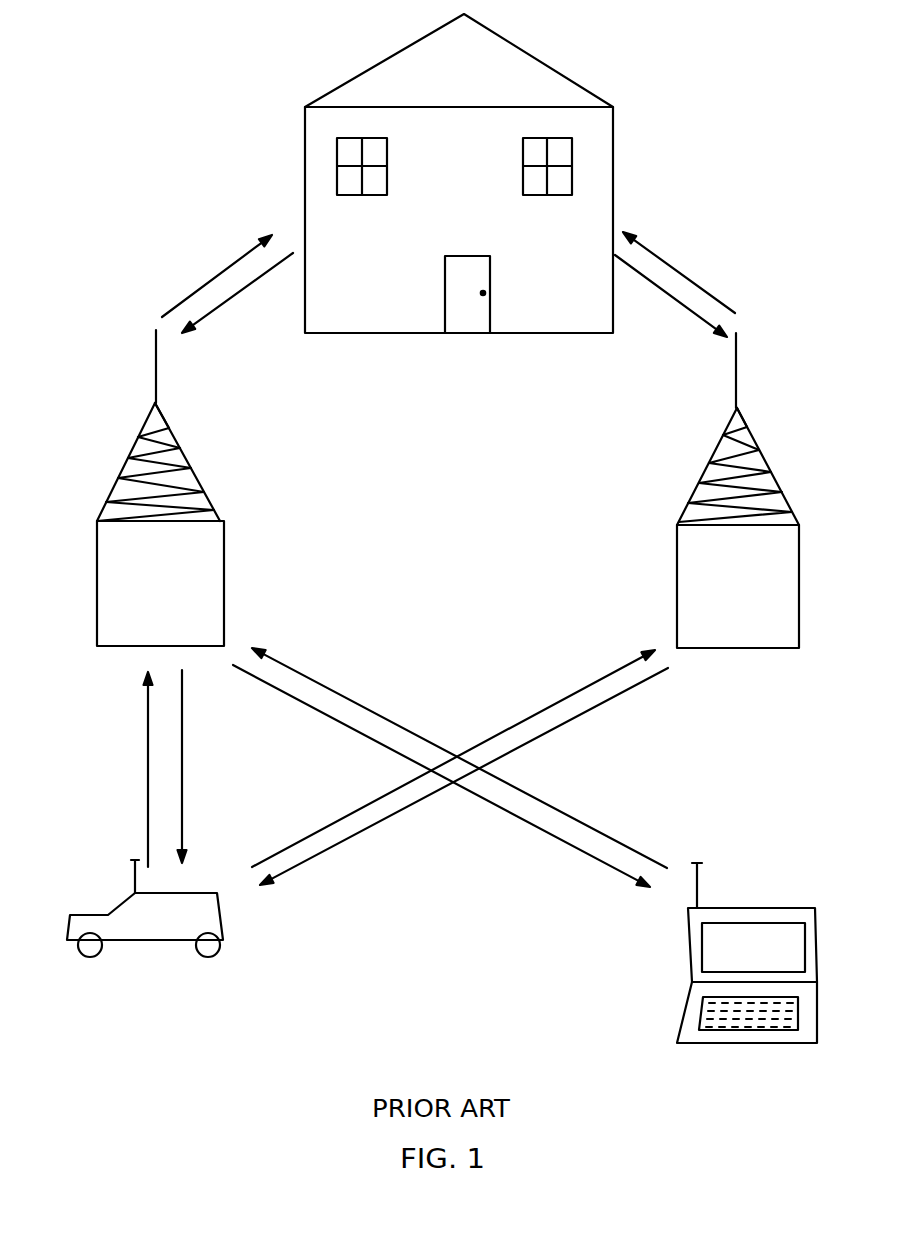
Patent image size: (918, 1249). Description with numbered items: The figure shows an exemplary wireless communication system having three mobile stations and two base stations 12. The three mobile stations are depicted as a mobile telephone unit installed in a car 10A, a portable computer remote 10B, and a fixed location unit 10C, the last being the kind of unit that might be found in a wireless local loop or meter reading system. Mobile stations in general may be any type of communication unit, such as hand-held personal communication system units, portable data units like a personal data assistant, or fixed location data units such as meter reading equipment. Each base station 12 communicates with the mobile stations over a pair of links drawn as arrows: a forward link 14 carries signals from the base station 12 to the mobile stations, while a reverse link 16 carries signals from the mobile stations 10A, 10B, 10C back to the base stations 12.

The mobile telephone unit installed in a car 10A is at (90, 915).
The portable computer remote 10B is at (792, 907).
The fixed location unit 10C is at (532, 57).
The base station 12 is at (128, 457).
The forward link 14 is at (232, 262).
The reverse link 16 is at (250, 285).